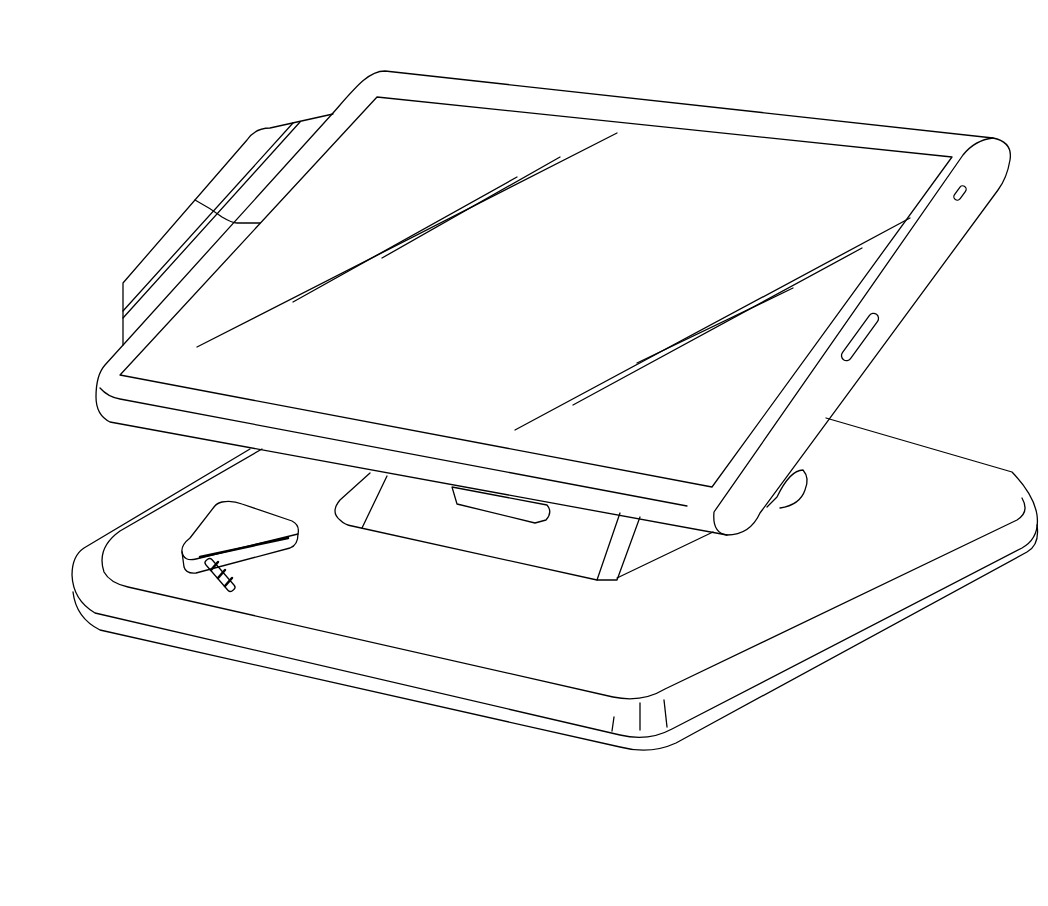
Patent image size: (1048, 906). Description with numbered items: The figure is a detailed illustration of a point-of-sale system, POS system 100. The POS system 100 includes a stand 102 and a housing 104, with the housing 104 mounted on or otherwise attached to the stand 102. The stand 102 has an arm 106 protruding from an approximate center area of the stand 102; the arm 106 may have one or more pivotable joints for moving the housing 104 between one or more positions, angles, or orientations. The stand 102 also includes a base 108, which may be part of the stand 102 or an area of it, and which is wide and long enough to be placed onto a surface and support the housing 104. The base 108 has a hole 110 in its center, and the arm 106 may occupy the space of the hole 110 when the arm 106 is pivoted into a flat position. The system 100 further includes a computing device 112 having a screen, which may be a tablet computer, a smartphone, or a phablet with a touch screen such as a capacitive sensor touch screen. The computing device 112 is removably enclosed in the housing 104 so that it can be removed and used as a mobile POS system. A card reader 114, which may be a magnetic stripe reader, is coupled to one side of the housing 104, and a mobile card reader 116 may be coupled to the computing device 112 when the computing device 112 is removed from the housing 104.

The POS system 100 is at (183, 70).
The stand 102 is at (127, 552).
The housing 104 is at (141, 412).
The arm 106 is at (432, 522).
The base 108 is at (357, 587).
The hole 110 is at (645, 544).
The computing device 112 is at (452, 141).
The card reader 114 is at (141, 258).
The mobile card reader 116 is at (258, 521).